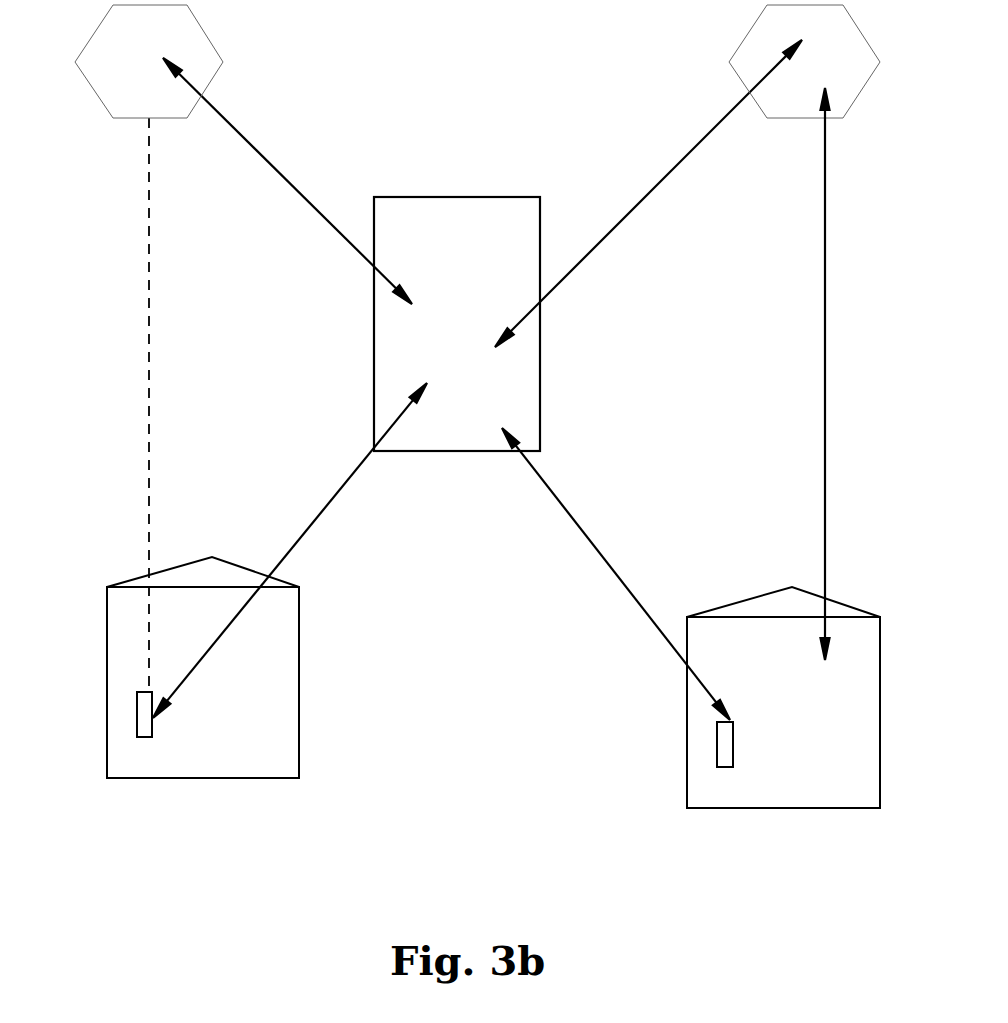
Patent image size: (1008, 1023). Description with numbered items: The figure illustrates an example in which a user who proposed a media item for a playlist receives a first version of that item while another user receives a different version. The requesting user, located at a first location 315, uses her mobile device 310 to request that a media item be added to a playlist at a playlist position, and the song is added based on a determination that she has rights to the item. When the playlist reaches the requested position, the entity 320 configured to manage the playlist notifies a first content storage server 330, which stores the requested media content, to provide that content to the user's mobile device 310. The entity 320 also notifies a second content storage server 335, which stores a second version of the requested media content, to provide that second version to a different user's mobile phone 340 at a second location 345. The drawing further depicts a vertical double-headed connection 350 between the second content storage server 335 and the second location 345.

The mobile device 310 is at (135, 718).
The location of the requesting user 315 is at (227, 767).
The entity configured to manage the playlist 320 is at (480, 422).
The first content storage server 330 is at (150, 77).
The second content storage server 335 is at (755, 23).
The mobile phone of a different user 340 is at (716, 747).
The location of the different user 345 is at (807, 797).
The satellite link 350 is at (825, 330).